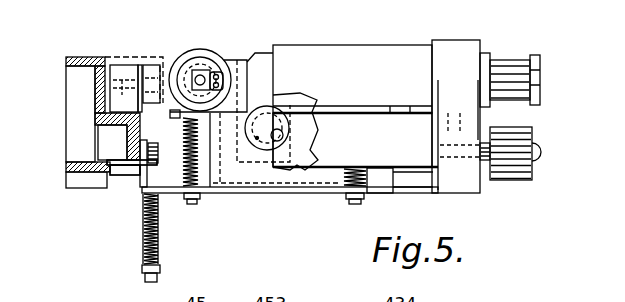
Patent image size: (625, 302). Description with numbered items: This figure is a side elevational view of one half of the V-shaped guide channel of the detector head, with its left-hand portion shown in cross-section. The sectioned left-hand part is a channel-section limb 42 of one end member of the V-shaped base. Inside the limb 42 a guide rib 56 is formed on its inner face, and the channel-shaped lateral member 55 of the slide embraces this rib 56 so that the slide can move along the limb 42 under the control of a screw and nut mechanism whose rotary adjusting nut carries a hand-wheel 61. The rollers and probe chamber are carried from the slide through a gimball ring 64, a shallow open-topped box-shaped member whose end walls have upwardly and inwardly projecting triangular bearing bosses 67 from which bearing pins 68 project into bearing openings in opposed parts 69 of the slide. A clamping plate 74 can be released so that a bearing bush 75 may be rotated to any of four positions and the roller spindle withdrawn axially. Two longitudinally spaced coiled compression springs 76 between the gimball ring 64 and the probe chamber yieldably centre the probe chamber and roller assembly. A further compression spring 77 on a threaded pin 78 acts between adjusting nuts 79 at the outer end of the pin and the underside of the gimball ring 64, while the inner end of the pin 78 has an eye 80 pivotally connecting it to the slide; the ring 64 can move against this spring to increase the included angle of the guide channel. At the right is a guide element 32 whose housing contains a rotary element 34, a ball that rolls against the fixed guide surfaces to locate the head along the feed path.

The guide element 32 is at (509, 170).
The rotary element 34 is at (537, 155).
The limb 42 is at (67, 167).
The lateral member 55 is at (143, 173).
The guide rib 56 is at (117, 170).
The hand-wheel 61 is at (303, 110).
The gimball ring 64 is at (262, 188).
The bearing boss 67 is at (152, 65).
The bearing pin 68 is at (139, 72).
The opposed part 69 is at (117, 65).
The clamping plate 74 is at (218, 77).
The bearing bush 75 is at (199, 76).
The coiled compression spring 76 is at (185, 170).
The compression spring 77 is at (143, 247).
The threaded pin 78 is at (142, 264).
The adjusting nut 79 is at (142, 277).
The eye 80 is at (157, 142).